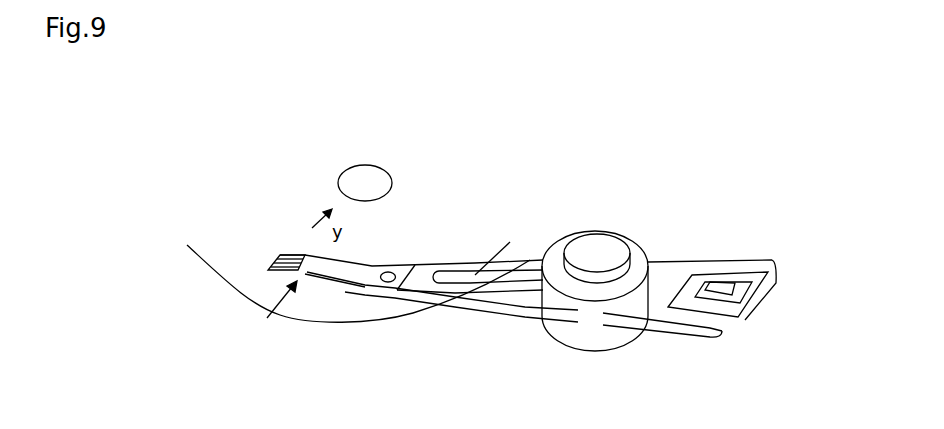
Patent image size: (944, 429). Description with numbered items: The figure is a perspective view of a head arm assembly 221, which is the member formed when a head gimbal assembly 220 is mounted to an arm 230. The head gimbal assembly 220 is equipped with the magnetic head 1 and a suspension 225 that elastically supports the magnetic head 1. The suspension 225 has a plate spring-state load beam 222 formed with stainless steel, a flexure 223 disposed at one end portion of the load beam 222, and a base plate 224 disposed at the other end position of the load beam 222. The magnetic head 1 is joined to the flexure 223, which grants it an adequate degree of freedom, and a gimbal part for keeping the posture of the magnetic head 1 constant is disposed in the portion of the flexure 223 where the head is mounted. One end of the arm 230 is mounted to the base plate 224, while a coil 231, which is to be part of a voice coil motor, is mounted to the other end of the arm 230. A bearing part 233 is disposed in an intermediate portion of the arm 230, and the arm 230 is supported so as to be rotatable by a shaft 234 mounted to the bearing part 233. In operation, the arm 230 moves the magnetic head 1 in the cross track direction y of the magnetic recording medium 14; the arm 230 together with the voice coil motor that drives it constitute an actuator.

The magnetic head 1 is at (287, 219).
The magnetic recording medium 14 is at (298, 318).
The head gimbal assembly 220 is at (353, 298).
The head arm assembly 221 is at (504, 222).
The load beam 222 is at (366, 263).
The flexure 223 is at (270, 257).
The base plate 224 is at (413, 264).
The suspension 225 is at (265, 310).
The arm 230 is at (461, 306).
The coil 231 is at (767, 309).
The bearing part 233 is at (556, 236).
The shaft 234 is at (606, 236).